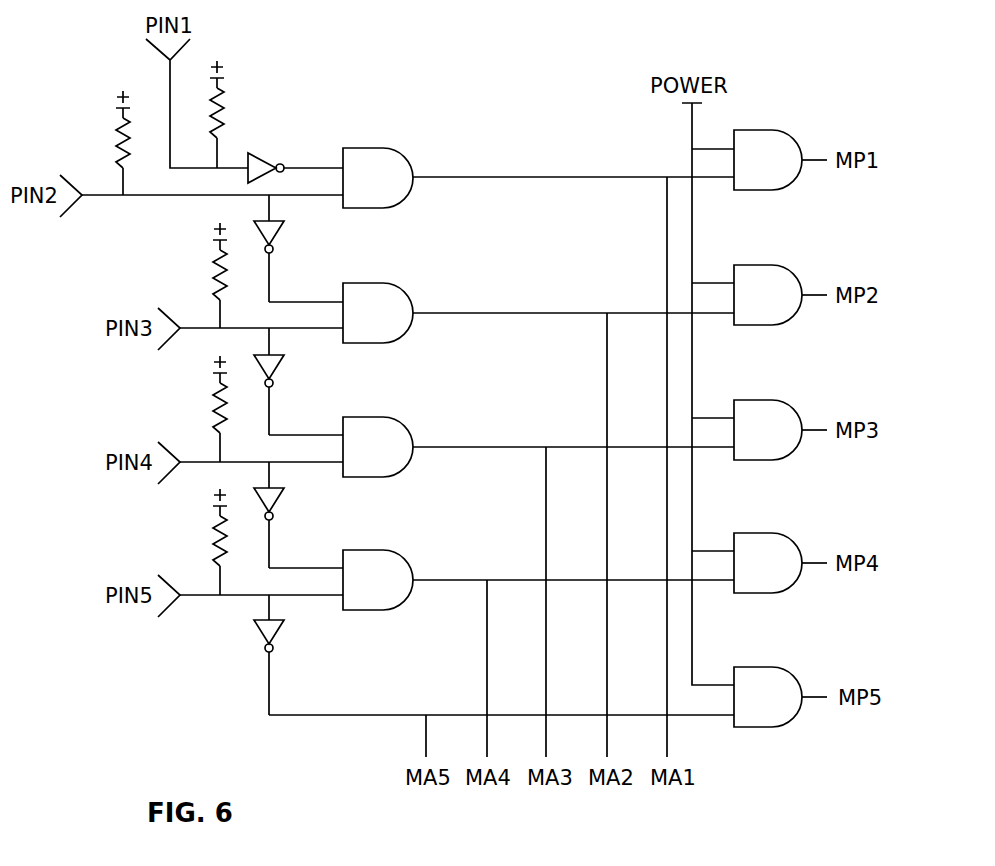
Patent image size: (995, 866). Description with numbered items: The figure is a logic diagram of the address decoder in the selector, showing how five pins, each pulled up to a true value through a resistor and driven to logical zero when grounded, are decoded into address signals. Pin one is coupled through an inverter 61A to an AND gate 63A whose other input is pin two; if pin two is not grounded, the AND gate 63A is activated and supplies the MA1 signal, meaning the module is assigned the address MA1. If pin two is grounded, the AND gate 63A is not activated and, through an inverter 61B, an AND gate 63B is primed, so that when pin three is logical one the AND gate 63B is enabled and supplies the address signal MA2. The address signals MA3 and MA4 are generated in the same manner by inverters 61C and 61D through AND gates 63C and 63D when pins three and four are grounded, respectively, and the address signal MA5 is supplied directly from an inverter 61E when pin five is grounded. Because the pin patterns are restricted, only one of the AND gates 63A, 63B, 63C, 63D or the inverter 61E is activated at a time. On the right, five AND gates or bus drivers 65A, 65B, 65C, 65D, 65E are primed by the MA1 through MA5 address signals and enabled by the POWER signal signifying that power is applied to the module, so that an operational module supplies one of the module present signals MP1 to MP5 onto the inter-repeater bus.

The inverter 61A is at (252, 152).
The inverter 61B is at (283, 233).
The inverter 61C is at (283, 367).
The inverter 61D is at (283, 500).
The inverter 61E is at (283, 632).
The AND gate 63A is at (368, 148).
The AND gate 63B is at (368, 283).
The AND gate 63C is at (368, 417).
The AND gate 63D is at (368, 550).
The AND gate 65A is at (758, 130).
The AND gate 65B is at (758, 265).
The AND gate 65C is at (758, 400).
The AND gate 65D is at (758, 533).
The AND gate 65E is at (758, 667).